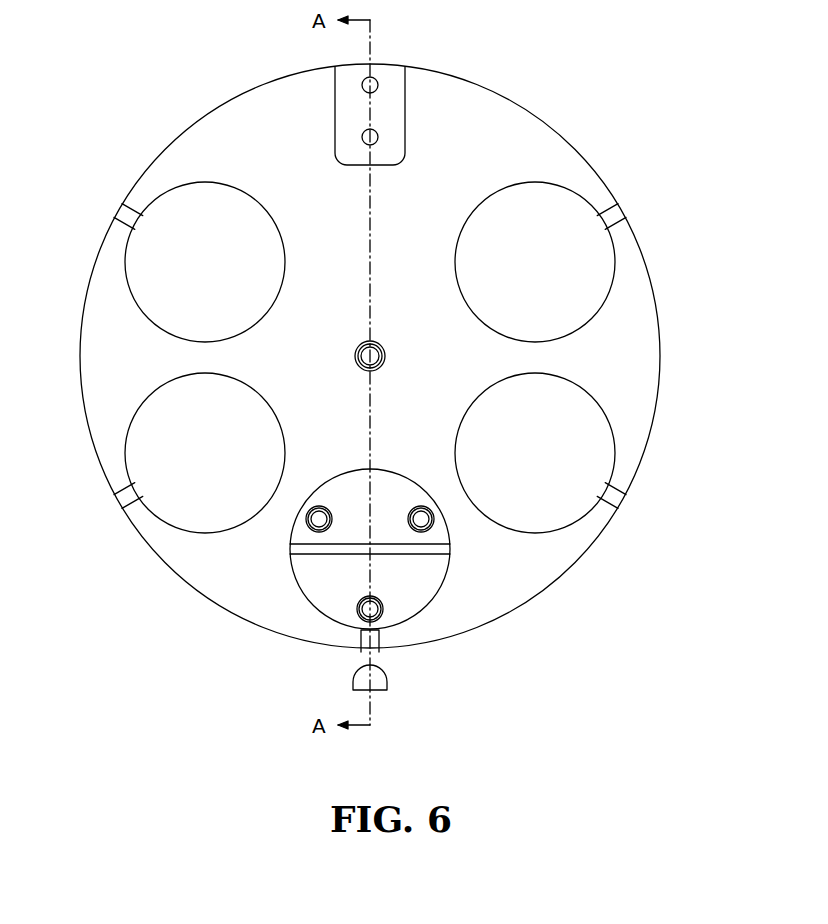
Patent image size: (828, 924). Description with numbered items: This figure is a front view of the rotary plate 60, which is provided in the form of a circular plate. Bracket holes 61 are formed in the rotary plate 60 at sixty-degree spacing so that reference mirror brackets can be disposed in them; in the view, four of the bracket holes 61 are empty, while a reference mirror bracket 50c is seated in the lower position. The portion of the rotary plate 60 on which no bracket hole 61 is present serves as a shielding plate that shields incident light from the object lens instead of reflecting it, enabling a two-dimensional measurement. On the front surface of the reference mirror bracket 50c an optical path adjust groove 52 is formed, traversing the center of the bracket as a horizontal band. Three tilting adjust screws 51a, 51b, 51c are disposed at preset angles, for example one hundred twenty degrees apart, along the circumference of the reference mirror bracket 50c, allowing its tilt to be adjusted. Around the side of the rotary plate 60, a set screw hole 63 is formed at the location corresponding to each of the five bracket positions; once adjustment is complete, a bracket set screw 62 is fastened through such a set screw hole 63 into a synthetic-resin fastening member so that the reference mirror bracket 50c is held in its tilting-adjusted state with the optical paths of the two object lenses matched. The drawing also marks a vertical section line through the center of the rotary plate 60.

The rotary plate 60 is at (502, 122).
The bracket hole 61 is at (180, 200).
The bracket set screw 62 is at (380, 692).
The set screw hole 63 is at (118, 208).
The reference mirror bracket 50c is at (412, 598).
The tilting adjust screw 51a is at (437, 522).
The tilting adjust screw 51b is at (358, 614).
The tilting adjust screw 51c is at (307, 528).
The optical path adjust groove 52 is at (430, 558).